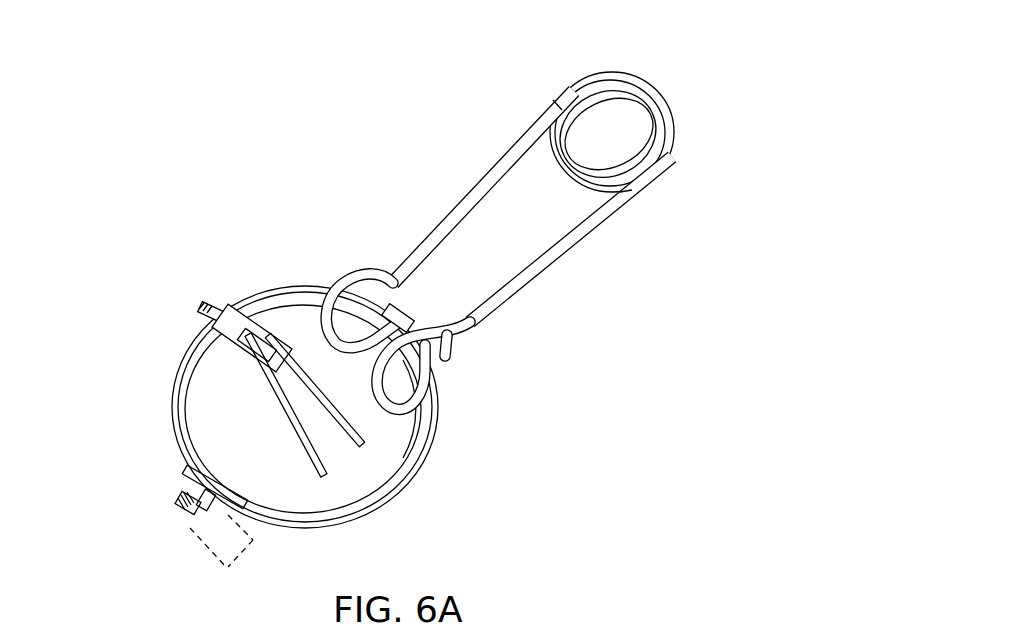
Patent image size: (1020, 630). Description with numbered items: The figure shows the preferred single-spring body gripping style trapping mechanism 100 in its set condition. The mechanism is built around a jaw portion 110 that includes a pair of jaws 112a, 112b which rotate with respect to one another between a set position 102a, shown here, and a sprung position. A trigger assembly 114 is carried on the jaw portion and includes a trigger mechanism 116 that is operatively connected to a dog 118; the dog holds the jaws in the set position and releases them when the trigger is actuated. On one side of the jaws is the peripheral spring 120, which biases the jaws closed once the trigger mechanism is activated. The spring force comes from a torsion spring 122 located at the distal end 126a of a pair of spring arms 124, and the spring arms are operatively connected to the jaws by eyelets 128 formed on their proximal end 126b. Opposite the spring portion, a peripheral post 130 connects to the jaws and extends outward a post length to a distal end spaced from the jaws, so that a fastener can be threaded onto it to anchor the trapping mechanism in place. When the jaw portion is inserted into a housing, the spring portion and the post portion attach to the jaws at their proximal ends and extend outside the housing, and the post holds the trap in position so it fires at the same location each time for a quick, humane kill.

The trapping mechanism 100 is at (100, 66).
The set position 102a is at (680, 69).
The jaw portion 110 is at (186, 266).
The jaw 112a is at (387, 490).
The jaw 112b is at (405, 430).
The trigger assembly 114 is at (197, 313).
The trigger mechanism 116 is at (358, 440).
The dog 118 is at (224, 303).
The peripheral spring 120 is at (445, 160).
The torsion spring 122 is at (655, 147).
The spring arms 124 is at (523, 278).
The distal end 126a is at (625, 197).
The proximal end 126b is at (400, 277).
The eyelets 128 is at (406, 297).
The peripheral post 130 is at (170, 485).